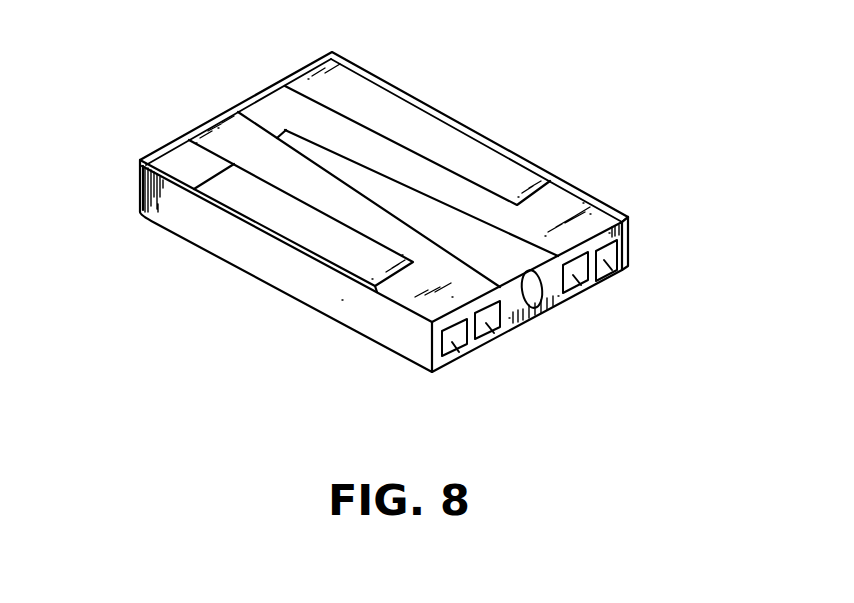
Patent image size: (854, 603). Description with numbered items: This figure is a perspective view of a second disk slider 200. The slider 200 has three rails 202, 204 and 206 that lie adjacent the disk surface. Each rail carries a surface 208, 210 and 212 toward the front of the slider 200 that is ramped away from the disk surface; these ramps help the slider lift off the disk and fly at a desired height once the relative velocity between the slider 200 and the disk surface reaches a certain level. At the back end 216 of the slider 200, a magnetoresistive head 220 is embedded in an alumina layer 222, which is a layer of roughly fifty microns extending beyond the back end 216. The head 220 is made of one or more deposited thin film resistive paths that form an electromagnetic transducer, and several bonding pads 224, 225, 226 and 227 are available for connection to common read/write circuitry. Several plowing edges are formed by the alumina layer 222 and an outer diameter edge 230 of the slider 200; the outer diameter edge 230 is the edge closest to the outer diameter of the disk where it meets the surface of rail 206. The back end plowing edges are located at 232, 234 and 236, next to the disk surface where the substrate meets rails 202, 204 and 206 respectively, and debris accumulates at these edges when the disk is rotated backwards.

The second slider 200 is at (498, 121).
The rail 202 is at (218, 180).
The rail 204 is at (307, 145).
The rail 206 is at (371, 101).
The ramped surface 208 is at (172, 161).
The ramped surface 210 is at (248, 113).
The ramped surface 212 is at (312, 77).
The back end 216 is at (628, 229).
The magnetoresistive head 220 is at (534, 304).
The alumina layer 222 is at (437, 337).
The bonding pad 224 is at (456, 348).
The bonding pad 225 is at (493, 329).
The bonding pad 226 is at (574, 279).
The bonding pad 227 is at (611, 266).
The outer diameter edge 230 is at (508, 146).
The back end plowing edge 232 is at (388, 285).
The back end plowing edge 234 is at (626, 250).
The back end plowing edge 236 is at (552, 203).